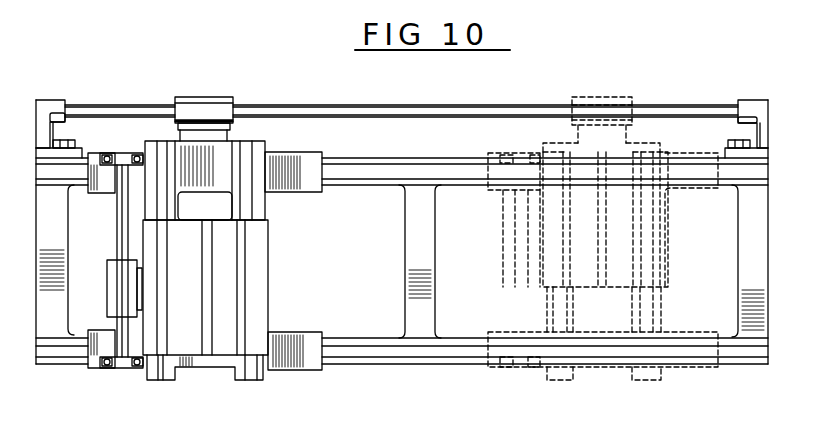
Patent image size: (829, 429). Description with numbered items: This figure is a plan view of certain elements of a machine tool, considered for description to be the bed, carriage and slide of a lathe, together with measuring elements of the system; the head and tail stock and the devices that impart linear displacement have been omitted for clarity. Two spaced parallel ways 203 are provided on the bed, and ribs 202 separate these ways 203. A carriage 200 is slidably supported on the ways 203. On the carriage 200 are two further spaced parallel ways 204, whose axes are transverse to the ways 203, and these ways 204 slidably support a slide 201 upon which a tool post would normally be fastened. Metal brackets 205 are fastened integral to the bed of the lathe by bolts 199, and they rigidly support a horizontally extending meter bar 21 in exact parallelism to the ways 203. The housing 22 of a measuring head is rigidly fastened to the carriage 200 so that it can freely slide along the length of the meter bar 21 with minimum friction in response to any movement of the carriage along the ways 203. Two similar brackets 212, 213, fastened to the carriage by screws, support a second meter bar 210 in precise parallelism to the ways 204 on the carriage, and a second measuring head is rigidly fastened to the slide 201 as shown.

The meter bar 21 is at (462, 108).
The housing of measuring head 22 is at (233, 104).
The bolts 199 is at (72, 143).
The carriage 200 is at (316, 162).
The slide 201 is at (259, 296).
The ribs 202 is at (60, 274).
The ways 203 is at (432, 163).
The ways 204 is at (166, 209).
The metal bracket 205 is at (52, 103).
The second meter bar 210 is at (119, 214).
The bracket 212 is at (128, 155).
The bracket 213 is at (122, 369).